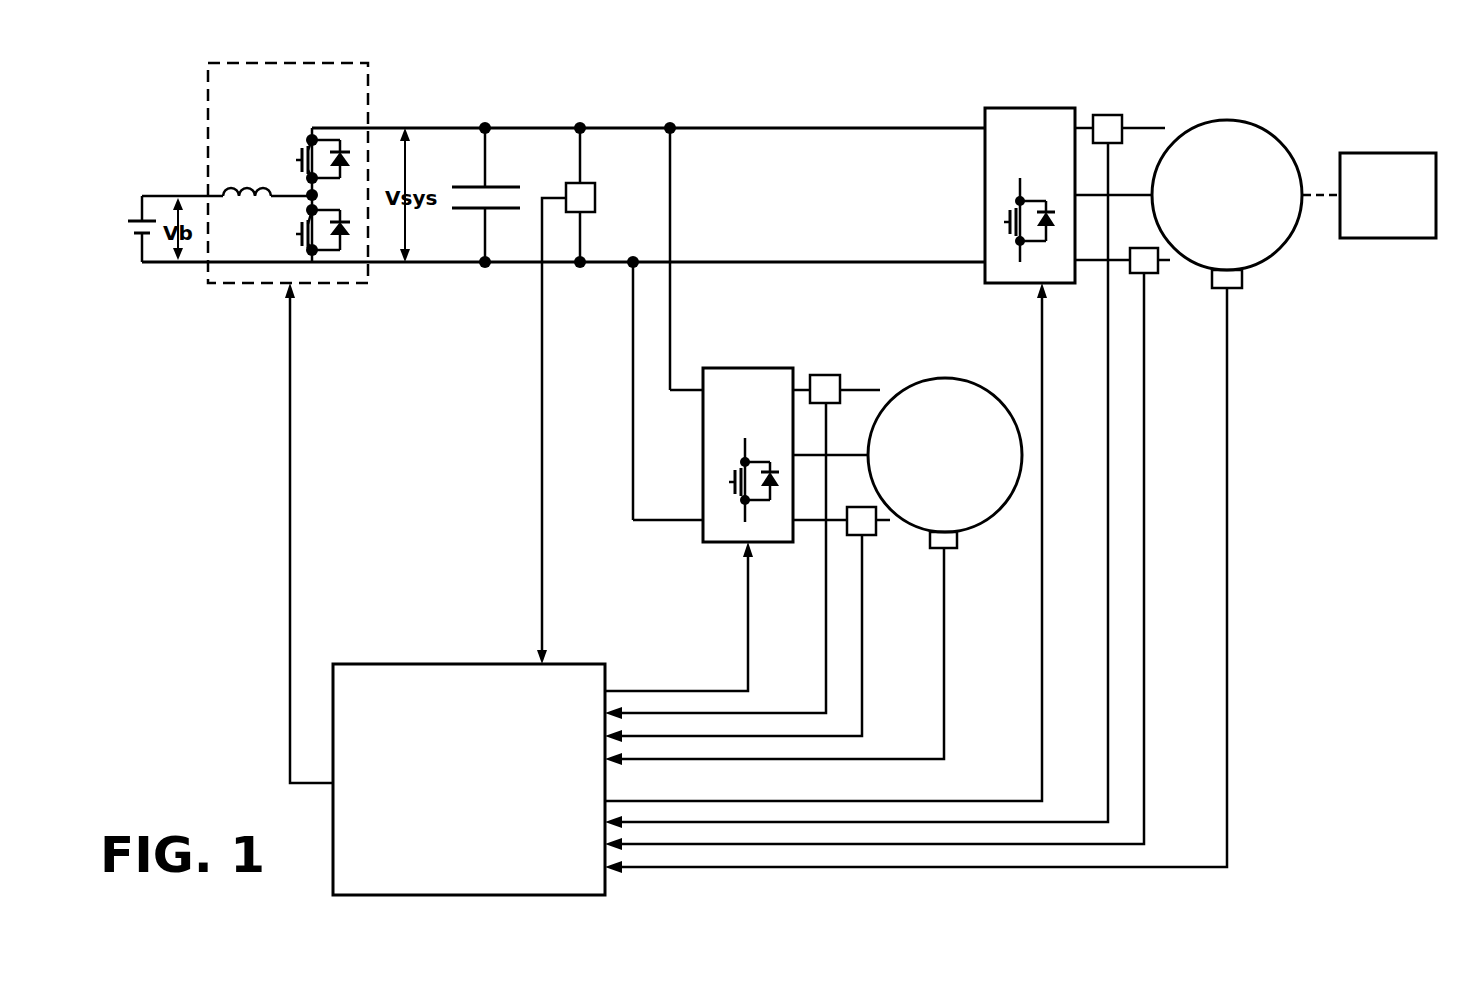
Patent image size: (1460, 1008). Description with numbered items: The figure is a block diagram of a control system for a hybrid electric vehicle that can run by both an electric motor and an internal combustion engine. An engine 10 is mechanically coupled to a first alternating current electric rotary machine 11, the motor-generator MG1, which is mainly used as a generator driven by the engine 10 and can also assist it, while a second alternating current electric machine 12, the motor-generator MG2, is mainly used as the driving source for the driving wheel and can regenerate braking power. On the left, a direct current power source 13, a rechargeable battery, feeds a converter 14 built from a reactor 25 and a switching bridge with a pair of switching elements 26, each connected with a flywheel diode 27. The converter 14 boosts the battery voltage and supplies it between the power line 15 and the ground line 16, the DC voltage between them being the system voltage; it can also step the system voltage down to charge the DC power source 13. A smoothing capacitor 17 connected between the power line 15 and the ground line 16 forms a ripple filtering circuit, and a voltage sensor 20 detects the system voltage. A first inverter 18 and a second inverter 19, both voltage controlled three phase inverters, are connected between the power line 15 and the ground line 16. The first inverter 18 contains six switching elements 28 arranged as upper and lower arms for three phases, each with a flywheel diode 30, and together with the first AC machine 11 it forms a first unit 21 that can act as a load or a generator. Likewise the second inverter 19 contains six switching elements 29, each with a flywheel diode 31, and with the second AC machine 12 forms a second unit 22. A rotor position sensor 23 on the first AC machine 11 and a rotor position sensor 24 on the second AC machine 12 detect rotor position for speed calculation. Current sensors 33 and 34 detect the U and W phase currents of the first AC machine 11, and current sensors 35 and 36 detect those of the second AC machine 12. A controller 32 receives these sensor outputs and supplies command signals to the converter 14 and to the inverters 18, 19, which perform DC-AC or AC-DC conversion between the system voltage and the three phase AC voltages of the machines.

The engine 10 is at (1403, 153).
The first alternating current electric rotary machine 11 is at (1262, 128).
The second alternating current electric machine 12 is at (975, 385).
The direct current power source 13 is at (138, 218).
The converter 14 is at (208, 72).
The power line 15 is at (440, 128).
The ground line 16 is at (440, 262).
The smoothing capacitor 17 is at (503, 184).
The first inverter 18 is at (1030, 108).
The second inverter 19 is at (750, 368).
The voltage sensor 20 is at (595, 198).
The first unit 21 is at (1209, 70).
The second unit 22 is at (918, 341).
The rotor position sensor 23 is at (1242, 280).
The rotor position sensor 24 is at (957, 540).
The reactor 25 is at (235, 190).
The switching element 26 is at (296, 160).
The flywheel diode 27 is at (344, 158).
The switching element 28 is at (1004, 222).
The switching element 29 is at (729, 482).
The flywheel diode 30 is at (1056, 218).
The flywheel diode 31 is at (780, 478).
The controller 32 is at (400, 664).
The current sensor 33 is at (1108, 115).
The current sensor 34 is at (1144, 248).
The current sensor 35 is at (825, 375).
The current sensor 36 is at (862, 507).